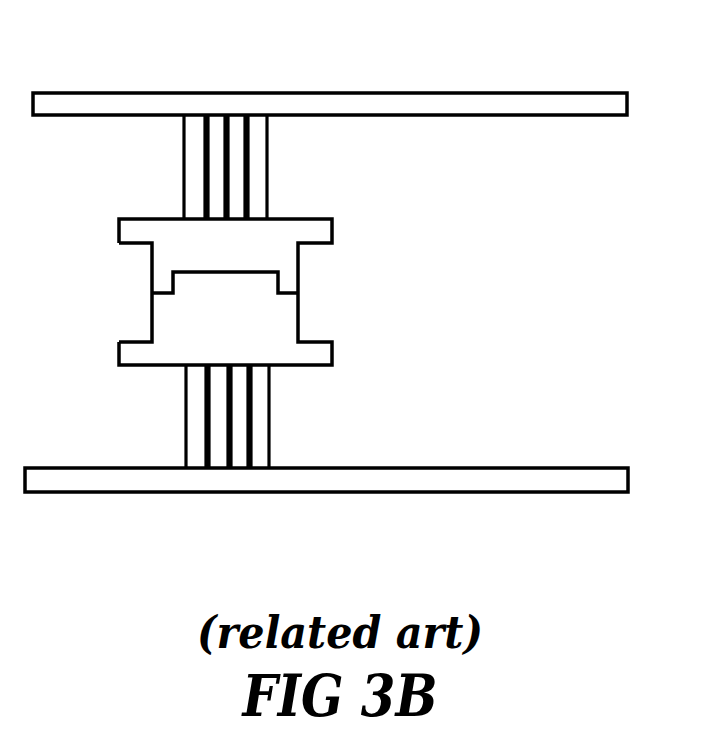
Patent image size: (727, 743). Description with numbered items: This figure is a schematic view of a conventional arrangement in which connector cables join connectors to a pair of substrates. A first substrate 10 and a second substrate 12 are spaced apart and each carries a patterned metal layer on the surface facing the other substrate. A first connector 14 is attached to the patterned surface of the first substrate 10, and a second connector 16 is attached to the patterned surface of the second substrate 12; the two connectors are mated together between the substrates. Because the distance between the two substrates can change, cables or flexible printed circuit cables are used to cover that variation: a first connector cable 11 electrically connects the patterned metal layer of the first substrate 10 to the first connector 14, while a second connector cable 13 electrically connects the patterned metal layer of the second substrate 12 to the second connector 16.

The first substrate 10 is at (548, 93).
The first connector cable 11 is at (267, 162).
The second substrate 12 is at (568, 492).
The second connector cable 13 is at (269, 415).
The first connector 14 is at (332, 232).
The second connector 16 is at (332, 358).